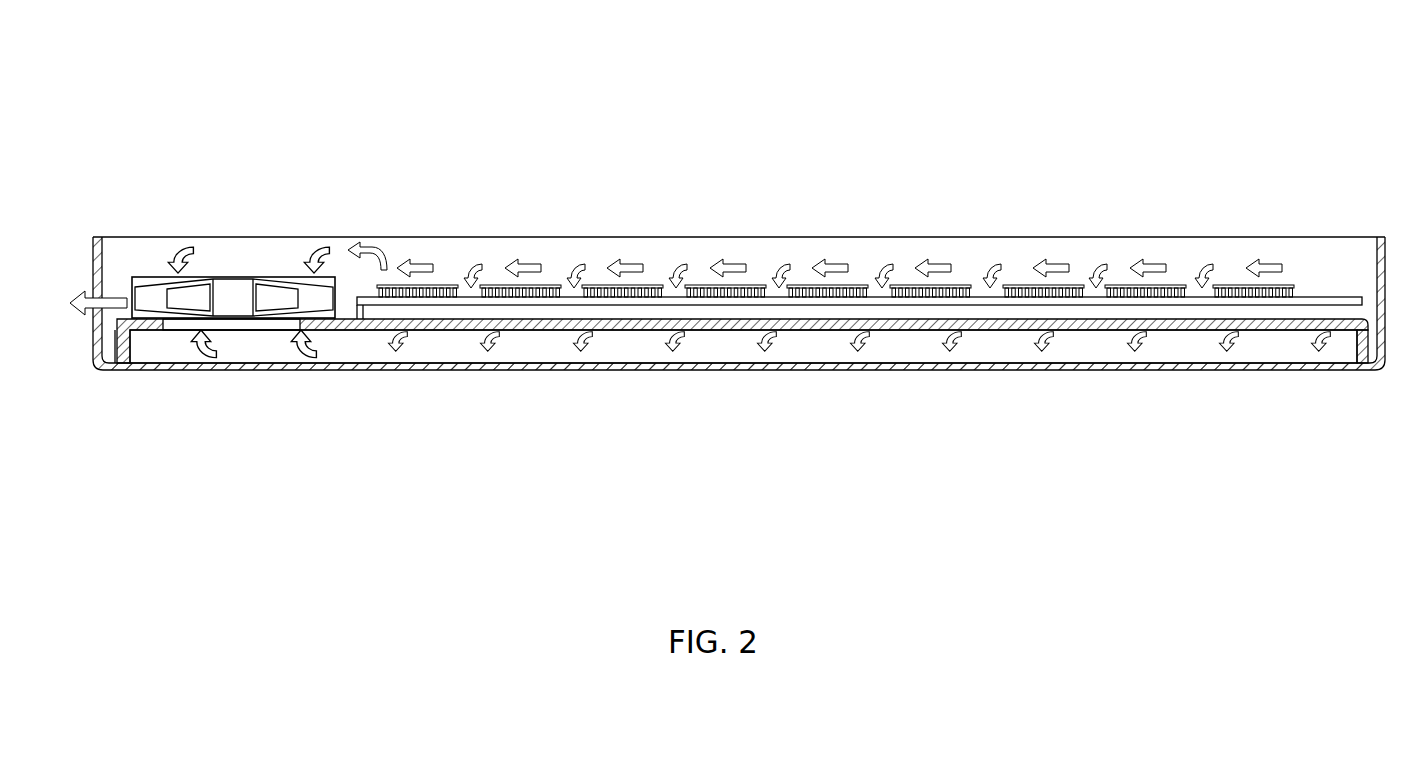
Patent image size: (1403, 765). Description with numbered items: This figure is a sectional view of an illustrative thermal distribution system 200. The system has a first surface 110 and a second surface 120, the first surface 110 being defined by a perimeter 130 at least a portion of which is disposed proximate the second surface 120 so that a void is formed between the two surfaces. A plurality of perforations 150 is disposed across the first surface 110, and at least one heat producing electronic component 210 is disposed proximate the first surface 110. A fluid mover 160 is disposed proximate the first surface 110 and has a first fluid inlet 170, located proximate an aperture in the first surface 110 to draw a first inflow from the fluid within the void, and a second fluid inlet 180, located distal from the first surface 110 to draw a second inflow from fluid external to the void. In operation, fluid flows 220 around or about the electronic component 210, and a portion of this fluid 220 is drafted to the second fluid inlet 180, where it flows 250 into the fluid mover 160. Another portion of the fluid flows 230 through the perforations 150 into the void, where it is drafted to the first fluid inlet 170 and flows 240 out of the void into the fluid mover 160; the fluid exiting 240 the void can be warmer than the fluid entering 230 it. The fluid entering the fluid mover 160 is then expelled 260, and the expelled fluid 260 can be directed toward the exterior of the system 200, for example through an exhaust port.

The thermal distribution system 200 is at (1166, 88).
The first surface 110 is at (1347, 325).
The second surface 120 is at (580, 368).
The perimeter 130 is at (115, 363).
The plurality of perforations 150 is at (1330, 330).
The fluid mover 160 is at (231, 316).
The first fluid inlet 170 is at (239, 322).
The second fluid inlet 180 is at (272, 280).
The heat producing electronic component 210 is at (750, 288).
The fluid flow about the electronic component 220 is at (998, 265).
The fluid flow through the perforations 230 is at (487, 352).
The fluid flow exiting the void 240 is at (309, 362).
The fluid flow entering the second fluid inlet 250 is at (325, 247).
The expelled fluid 260 is at (77, 290).